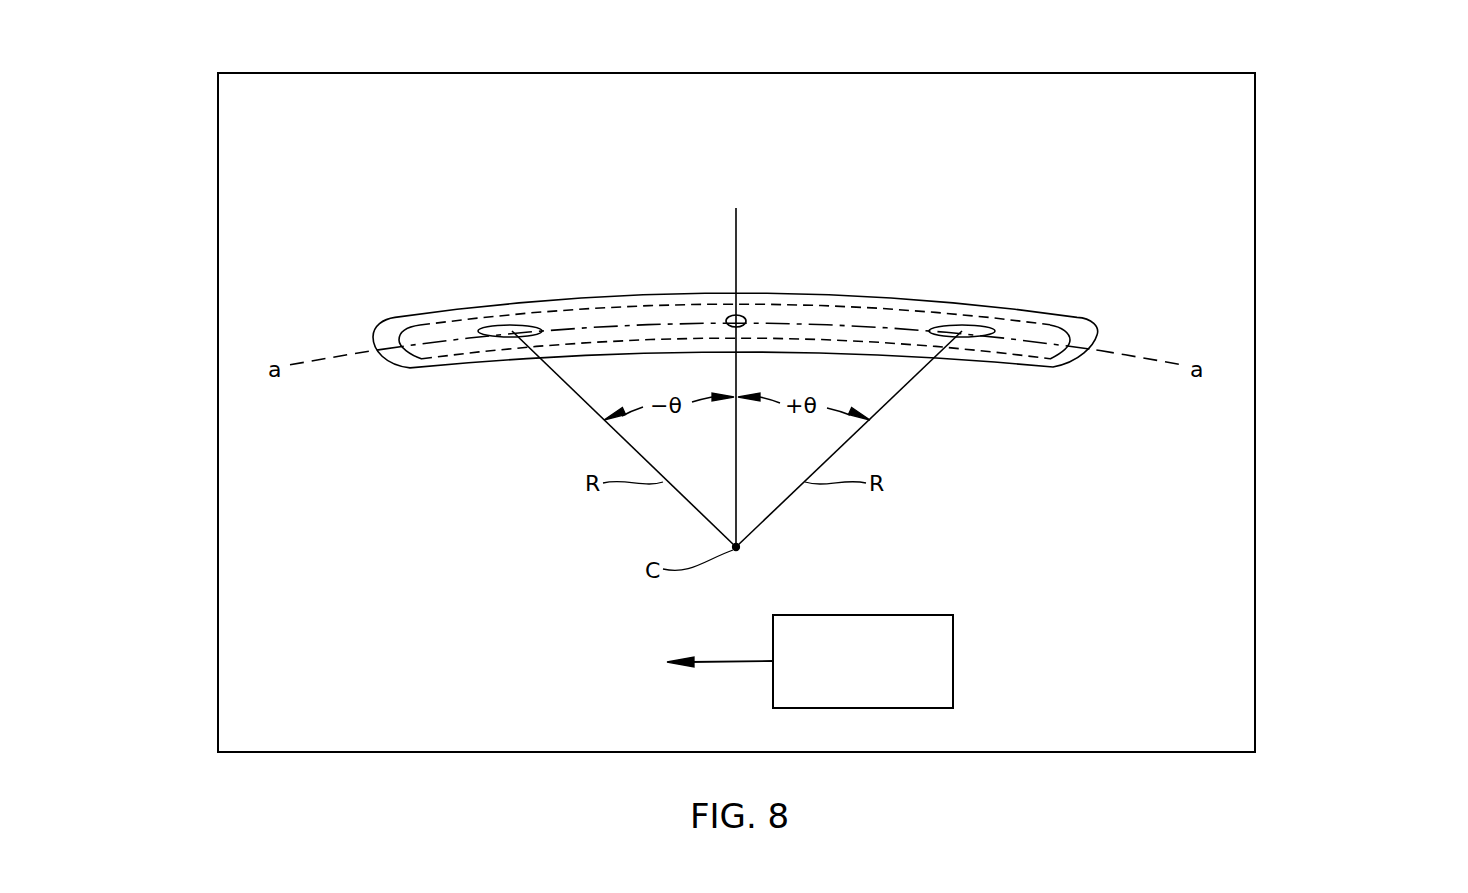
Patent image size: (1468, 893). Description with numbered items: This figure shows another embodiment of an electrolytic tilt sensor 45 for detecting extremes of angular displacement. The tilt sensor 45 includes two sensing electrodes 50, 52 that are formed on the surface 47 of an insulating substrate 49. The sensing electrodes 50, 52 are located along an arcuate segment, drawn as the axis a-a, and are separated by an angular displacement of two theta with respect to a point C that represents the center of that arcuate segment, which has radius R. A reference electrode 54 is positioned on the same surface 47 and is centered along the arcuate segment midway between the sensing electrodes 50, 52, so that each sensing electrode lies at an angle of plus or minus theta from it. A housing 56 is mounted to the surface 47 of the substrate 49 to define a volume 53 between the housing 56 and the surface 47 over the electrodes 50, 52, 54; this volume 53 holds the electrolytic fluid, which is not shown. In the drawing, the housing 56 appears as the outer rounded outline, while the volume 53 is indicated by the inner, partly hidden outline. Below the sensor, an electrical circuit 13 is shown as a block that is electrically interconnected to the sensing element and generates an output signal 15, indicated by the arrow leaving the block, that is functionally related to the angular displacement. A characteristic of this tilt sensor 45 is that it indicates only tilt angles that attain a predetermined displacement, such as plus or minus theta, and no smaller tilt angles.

The electrical circuit 13 is at (953, 662).
The output signal 15 is at (730, 665).
The tilt sensor 45 is at (1320, 185).
The surface 47 is at (325, 133).
The insulating substrate 49 is at (1255, 645).
The sensing electrode 50 is at (508, 325).
The sensing electrode 52 is at (967, 328).
The volume 53 is at (607, 335).
The reference electrode 54 is at (742, 317).
The housing 56 is at (1097, 333).